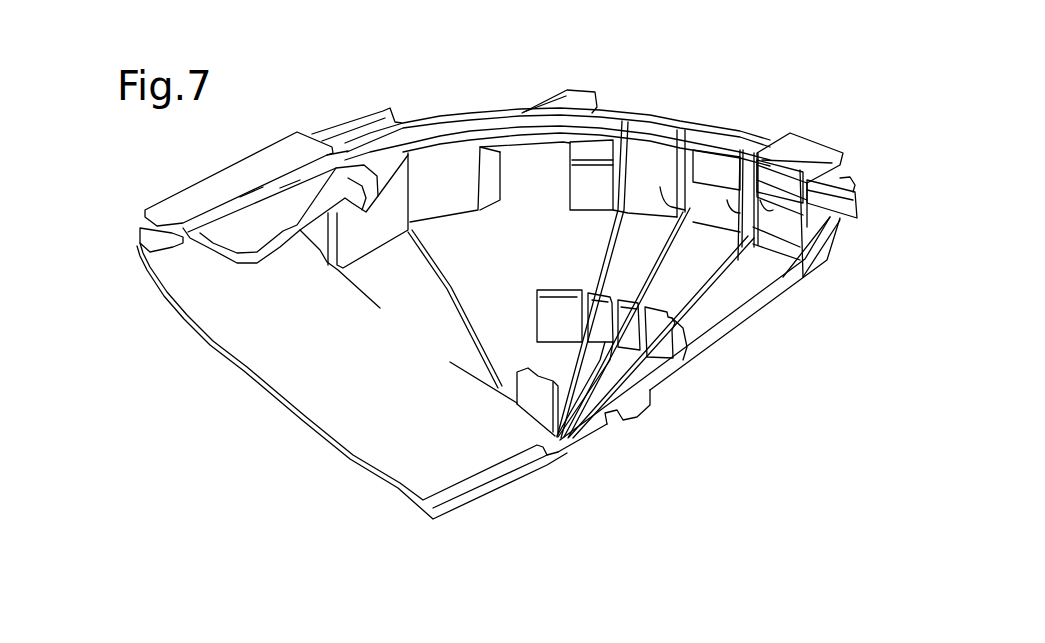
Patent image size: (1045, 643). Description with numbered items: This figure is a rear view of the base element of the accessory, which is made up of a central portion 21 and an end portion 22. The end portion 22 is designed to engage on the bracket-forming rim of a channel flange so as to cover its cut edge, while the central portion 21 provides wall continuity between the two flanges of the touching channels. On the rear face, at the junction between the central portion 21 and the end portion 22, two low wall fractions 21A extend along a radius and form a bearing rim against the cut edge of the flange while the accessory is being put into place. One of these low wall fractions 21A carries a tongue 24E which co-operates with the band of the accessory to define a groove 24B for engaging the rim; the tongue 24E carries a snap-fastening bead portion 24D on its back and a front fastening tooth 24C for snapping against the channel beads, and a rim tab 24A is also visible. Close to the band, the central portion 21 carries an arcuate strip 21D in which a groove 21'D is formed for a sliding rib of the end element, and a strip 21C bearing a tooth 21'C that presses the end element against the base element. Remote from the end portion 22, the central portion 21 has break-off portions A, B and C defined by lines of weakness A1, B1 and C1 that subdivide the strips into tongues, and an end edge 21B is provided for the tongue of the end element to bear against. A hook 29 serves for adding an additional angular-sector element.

The central portion 21 is at (481, 265).
The low wall fraction 21A is at (330, 240).
The end edge 21B is at (707, 348).
The strip 21C is at (600, 330).
The tooth 21'C is at (669, 371).
The strip 21D is at (790, 248).
The groove 21'D is at (748, 174).
The end portion 22 is at (315, 407).
The rim tab 24A is at (392, 110).
The groove 24B is at (140, 233).
The front fastening tooth 24C is at (173, 242).
The snap-fastening bead portion 24D is at (252, 198).
The tongue 24E is at (282, 150).
The hook 29 is at (858, 203).
The break-off portion A is at (747, 307).
The line of weakness A1 is at (723, 267).
The break-off portion B is at (647, 277).
The line of weakness B1 is at (667, 252).
The break-off portion C is at (620, 245).
The line of weakness C1 is at (613, 222).